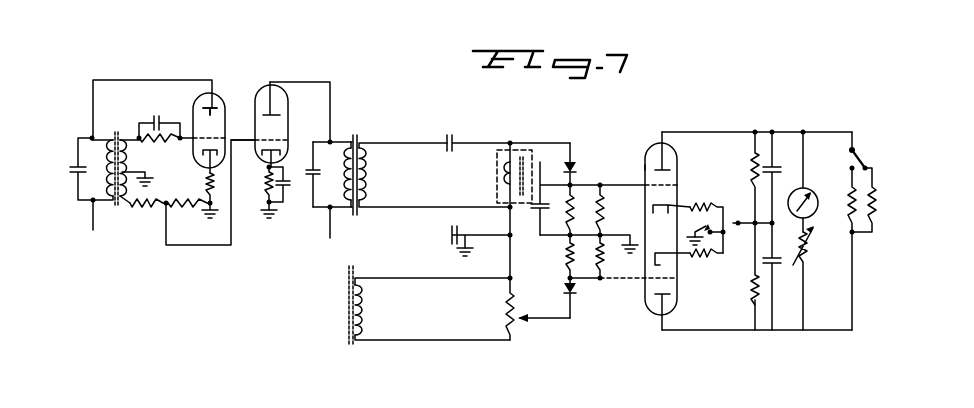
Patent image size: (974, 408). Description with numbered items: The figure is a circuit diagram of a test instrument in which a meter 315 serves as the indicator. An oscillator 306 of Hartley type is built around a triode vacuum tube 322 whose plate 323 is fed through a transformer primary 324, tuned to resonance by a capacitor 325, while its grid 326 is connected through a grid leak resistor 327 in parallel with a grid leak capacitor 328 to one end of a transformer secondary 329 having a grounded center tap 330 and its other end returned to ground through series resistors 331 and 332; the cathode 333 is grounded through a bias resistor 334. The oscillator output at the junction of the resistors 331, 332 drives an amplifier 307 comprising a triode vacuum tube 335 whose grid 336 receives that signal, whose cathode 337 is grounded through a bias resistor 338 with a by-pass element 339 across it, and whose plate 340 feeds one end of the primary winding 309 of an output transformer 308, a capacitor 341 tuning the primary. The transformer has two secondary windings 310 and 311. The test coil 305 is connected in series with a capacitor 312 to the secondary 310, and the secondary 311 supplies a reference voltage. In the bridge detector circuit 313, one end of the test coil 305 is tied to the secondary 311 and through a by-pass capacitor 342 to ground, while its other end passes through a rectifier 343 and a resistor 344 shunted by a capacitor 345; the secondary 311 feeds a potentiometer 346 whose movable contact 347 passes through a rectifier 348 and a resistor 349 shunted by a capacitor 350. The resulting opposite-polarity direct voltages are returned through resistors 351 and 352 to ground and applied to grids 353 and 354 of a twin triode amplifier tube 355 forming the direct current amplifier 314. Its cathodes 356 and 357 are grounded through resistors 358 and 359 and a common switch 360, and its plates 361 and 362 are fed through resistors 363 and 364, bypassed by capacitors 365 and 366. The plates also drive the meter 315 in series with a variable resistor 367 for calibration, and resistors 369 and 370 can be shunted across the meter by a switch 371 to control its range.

The test coil 305 is at (497, 178).
The oscillator 306 is at (212, 250).
The amplifier 307 is at (262, 230).
The output transformer 308 is at (358, 128).
The primary winding 309 is at (346, 148).
The secondary winding 310 is at (370, 176).
The secondary winding 311 is at (368, 305).
The capacitor 312 is at (447, 136).
The bridge detector circuit 313 is at (558, 133).
The direct current amplifier 314 is at (684, 312).
The meter 315 is at (805, 188).
The triode vacuum tube 322 is at (207, 128).
The plate 323 is at (214, 102).
The transformer primary 324 is at (108, 140).
The capacitor 325 is at (75, 162).
The grid 326 is at (172, 132).
The grid leak resistor 327 is at (134, 140).
The grid leak capacitor 328 is at (152, 120).
The transformer secondary 329 is at (126, 199).
The center tap 330 is at (110, 179).
The resistor 331 is at (156, 206).
The resistor 332 is at (186, 204).
The cathode 333 is at (204, 151).
The bias resistor 334 is at (204, 180).
The triode vacuum tube 335 is at (277, 100).
The grid 336 is at (278, 150).
The cathode 337 is at (250, 141).
The bias resistor 338 is at (264, 170).
The by-pass capacitor 339 is at (313, 168).
The plate 340 is at (263, 110).
The capacitor 341 is at (290, 186).
The by-pass capacitor 342 is at (483, 233).
The rectifier 343 is at (575, 166).
The resistor 344 is at (575, 196).
The capacitor 345 is at (588, 190).
The potentiometer 346 is at (505, 300).
The movable contact 347 is at (526, 319).
The rectifier 348 is at (575, 290).
The resistor 349 is at (567, 250).
The capacitor 350 is at (528, 286).
The resistor 351 is at (604, 228).
The resistor 352 is at (604, 256).
The grid 353 is at (748, 170).
The grid 354 is at (645, 288).
The twin triode amplifier tube 355 is at (678, 150).
The cathode 356 is at (604, 212).
The cathode 357 is at (718, 255).
The resistor 358 is at (730, 205).
The resistor 359 is at (752, 286).
The common switch 360 is at (670, 238).
The plate 361 is at (648, 150).
The plate 362 is at (657, 295).
The resistor 363 is at (712, 209).
The resistor 364 is at (750, 300).
The capacitor 365 is at (778, 165).
The capacitor 366 is at (778, 265).
The variable resistor 367 is at (810, 255).
The resistor 369 is at (848, 195).
The resistor 370 is at (876, 200).
The switch 371 is at (857, 157).